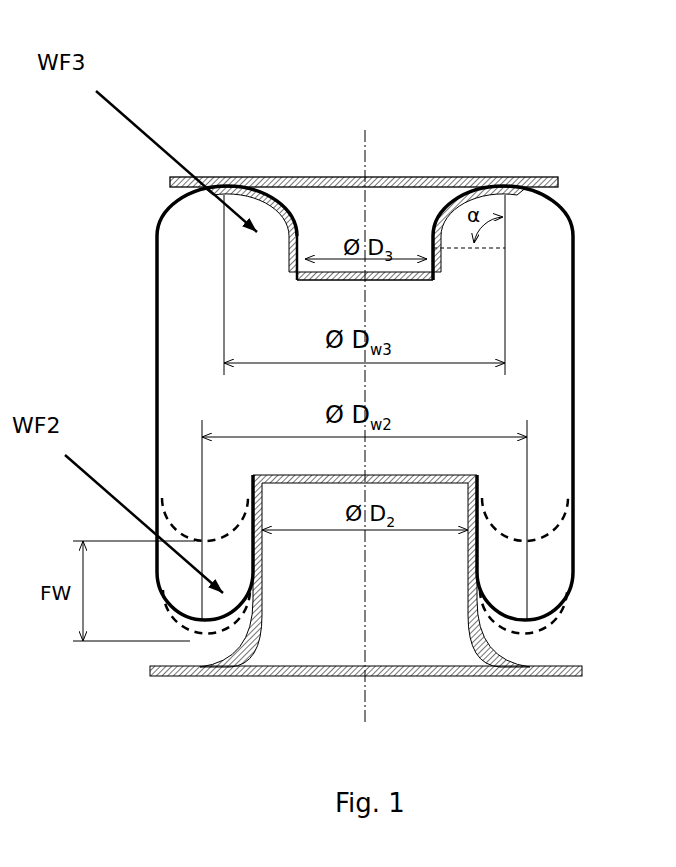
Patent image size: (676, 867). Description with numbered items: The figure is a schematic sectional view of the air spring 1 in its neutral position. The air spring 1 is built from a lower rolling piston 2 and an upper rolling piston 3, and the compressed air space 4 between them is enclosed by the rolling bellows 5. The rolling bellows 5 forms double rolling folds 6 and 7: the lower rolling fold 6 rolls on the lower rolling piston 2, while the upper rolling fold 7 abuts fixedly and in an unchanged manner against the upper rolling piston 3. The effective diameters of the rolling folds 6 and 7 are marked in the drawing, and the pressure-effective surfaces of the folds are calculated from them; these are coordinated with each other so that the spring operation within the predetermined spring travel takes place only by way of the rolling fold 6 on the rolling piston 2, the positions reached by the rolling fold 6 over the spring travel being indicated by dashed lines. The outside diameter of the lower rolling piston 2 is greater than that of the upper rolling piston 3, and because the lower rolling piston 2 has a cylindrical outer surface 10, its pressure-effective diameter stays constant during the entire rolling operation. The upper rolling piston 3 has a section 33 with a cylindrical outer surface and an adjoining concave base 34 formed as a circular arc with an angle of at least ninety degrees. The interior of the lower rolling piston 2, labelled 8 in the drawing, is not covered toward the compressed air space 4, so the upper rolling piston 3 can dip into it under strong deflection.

The air spring 1 is at (487, 150).
The lower rolling piston 2 is at (478, 568).
The upper rolling piston 3 is at (435, 263).
The compressed air space 4 is at (458, 321).
The rolling bellows 5 is at (573, 397).
The rolling fold 6 is at (188, 621).
The rolling fold 7 is at (172, 205).
The lower chamber 8 is at (318, 625).
The cylindrical outer surface 10 is at (480, 567).
The section 33 is at (295, 258).
The concave base 34 is at (267, 197).